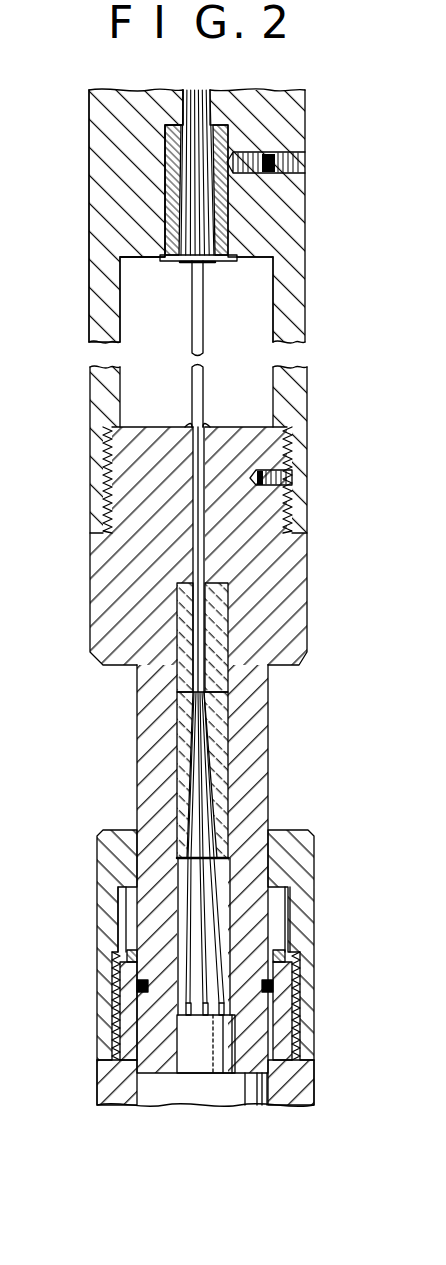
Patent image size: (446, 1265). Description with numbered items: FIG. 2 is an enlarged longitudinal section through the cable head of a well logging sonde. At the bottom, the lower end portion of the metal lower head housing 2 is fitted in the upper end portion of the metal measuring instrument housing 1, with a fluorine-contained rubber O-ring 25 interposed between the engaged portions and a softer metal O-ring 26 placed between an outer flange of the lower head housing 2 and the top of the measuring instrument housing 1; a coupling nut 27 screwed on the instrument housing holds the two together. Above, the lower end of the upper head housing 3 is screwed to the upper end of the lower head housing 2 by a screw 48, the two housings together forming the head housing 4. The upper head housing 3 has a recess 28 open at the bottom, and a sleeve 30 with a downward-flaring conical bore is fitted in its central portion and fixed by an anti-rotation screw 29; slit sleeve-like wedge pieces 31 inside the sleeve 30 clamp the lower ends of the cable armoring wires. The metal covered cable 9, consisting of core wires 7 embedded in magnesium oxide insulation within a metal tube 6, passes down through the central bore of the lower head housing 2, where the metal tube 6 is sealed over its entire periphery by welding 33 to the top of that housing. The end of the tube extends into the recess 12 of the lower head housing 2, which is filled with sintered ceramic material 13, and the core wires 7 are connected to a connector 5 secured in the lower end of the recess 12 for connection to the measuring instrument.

The measuring instrument housing 1 is at (108, 1090).
The lower head housing 2 is at (137, 700).
The upper head housing 3 is at (305, 278).
The head housing 4 is at (90, 534).
The connector 5 is at (225, 1040).
The metal tube 6 is at (200, 603).
The core wires 7 is at (190, 912).
The metal covered cable 9 is at (165, 325).
The recess 12 is at (229, 703).
The ceramic material 13 is at (180, 790).
The O-ring 25 is at (137, 986).
The O-ring 26 is at (125, 958).
The coupling nut 27 is at (315, 838).
The recess 28 is at (258, 325).
The anti-rotation screw 29 is at (257, 152).
The sleeve 30 is at (165, 168).
The wedge pieces 31 is at (179, 262).
The welding 33 is at (203, 422).
The screw 48 is at (300, 479).